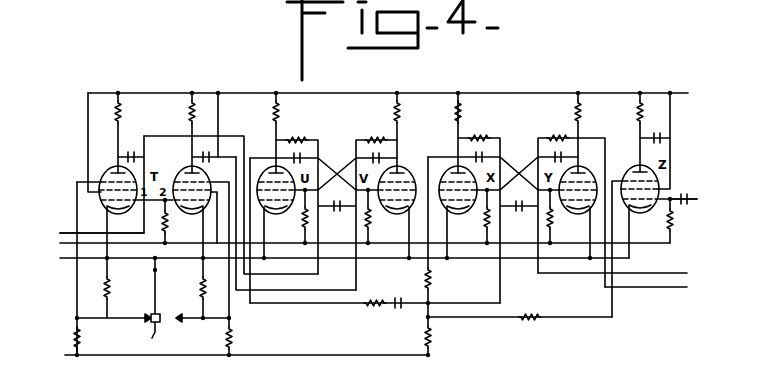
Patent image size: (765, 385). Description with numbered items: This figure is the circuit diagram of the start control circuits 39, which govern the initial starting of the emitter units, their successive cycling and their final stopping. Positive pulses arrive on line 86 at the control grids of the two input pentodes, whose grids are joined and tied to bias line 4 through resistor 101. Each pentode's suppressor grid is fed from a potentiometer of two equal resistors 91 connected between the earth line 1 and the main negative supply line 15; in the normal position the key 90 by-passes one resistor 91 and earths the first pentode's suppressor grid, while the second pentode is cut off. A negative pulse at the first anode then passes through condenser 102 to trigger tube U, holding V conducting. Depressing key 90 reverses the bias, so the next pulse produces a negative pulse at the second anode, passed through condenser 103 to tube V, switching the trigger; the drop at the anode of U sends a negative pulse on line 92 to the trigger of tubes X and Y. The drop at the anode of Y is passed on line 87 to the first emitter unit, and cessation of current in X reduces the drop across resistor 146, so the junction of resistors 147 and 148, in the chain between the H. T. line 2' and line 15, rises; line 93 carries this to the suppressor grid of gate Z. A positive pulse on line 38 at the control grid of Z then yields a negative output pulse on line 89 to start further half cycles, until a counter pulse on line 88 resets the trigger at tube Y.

The earth line 1 is at (72, 258).
The anode resistors 2' is at (155, 133).
The bias line 4 is at (588, 243).
The main negative supply line 15 is at (321, 355).
The line 38 is at (690, 194).
The start control circuits 39 is at (382, 88).
The line 86 is at (97, 224).
The line 87 is at (684, 287).
The counter output line 88 is at (673, 273).
The line 89 is at (666, 133).
The key 90 is at (153, 304).
The resistor 91 is at (141, 306).
The line 92 is at (318, 304).
The line 93 is at (456, 318).
The resistor 101 is at (168, 222).
The condenser 102 is at (136, 152).
The condenser 103 is at (211, 151).
The resistor 146 is at (455, 108).
The resistor 147 is at (432, 274).
The resistor 148 is at (432, 338).